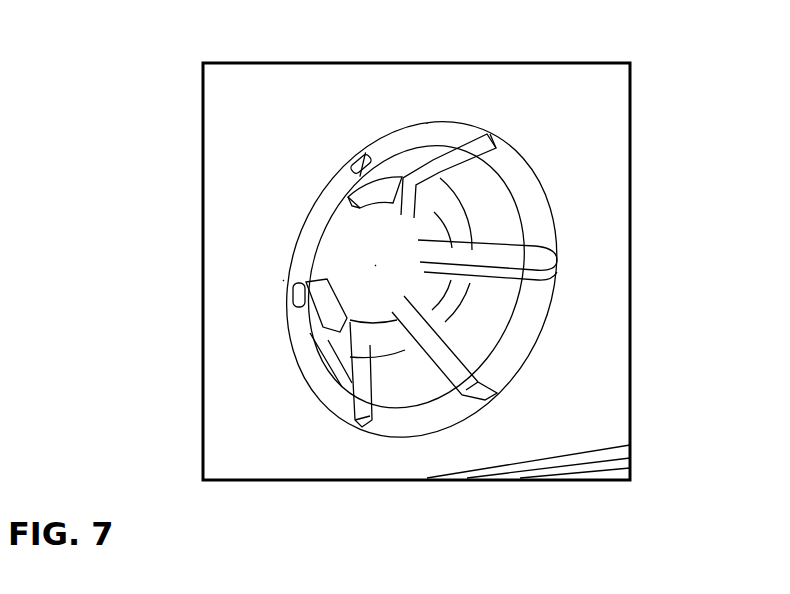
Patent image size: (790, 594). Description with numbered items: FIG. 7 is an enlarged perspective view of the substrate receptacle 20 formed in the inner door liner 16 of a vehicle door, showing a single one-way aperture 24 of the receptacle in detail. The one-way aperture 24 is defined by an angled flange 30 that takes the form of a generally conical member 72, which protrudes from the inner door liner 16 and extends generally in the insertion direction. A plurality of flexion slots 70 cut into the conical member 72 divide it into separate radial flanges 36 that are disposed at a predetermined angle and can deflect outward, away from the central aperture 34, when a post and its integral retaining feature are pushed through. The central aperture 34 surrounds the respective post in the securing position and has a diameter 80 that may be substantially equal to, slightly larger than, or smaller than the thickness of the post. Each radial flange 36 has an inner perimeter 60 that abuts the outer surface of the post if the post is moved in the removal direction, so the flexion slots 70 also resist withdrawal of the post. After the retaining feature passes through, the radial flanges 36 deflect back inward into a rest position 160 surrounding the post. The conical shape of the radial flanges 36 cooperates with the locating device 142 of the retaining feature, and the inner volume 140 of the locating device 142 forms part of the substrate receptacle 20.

The inner door liner 16 is at (505, 57).
The substrate receptacle 20 is at (340, 107).
The one-way aperture 24 is at (547, 145).
The angled flange 30 is at (498, 308).
The central aperture 34 is at (350, 247).
The radial flange 36 is at (377, 193).
The inner perimeter 60 is at (342, 290).
The flexion slot 70 is at (500, 242).
The conical member 72 is at (273, 338).
The diameter 80 is at (375, 265).
The inner volume 140 is at (462, 326).
The locating device 142 is at (293, 396).
The rest position 160 is at (300, 167).